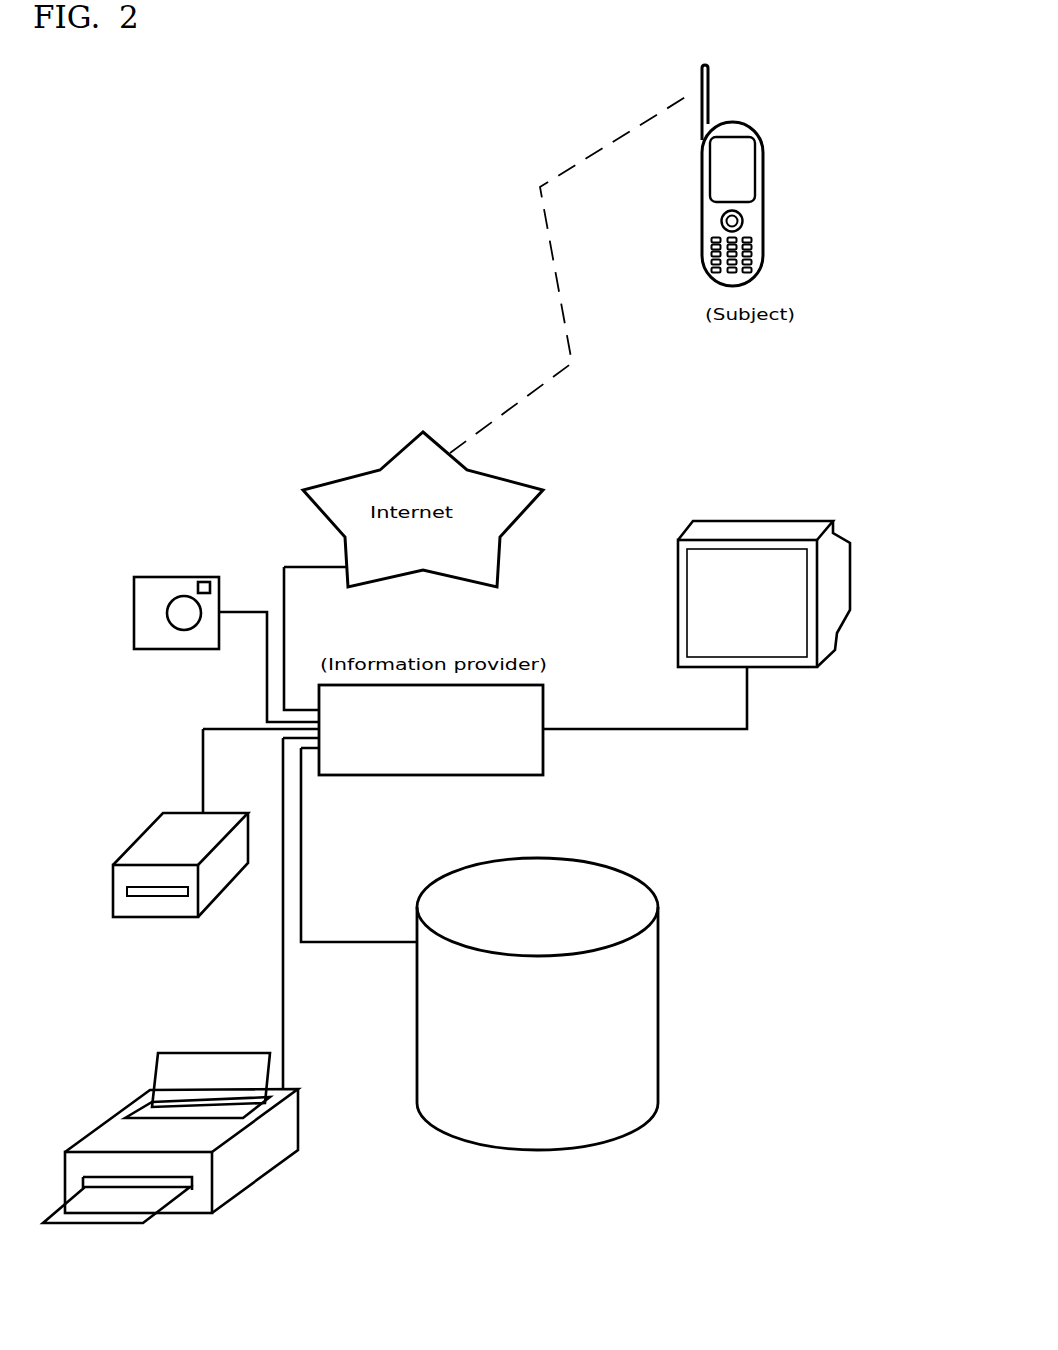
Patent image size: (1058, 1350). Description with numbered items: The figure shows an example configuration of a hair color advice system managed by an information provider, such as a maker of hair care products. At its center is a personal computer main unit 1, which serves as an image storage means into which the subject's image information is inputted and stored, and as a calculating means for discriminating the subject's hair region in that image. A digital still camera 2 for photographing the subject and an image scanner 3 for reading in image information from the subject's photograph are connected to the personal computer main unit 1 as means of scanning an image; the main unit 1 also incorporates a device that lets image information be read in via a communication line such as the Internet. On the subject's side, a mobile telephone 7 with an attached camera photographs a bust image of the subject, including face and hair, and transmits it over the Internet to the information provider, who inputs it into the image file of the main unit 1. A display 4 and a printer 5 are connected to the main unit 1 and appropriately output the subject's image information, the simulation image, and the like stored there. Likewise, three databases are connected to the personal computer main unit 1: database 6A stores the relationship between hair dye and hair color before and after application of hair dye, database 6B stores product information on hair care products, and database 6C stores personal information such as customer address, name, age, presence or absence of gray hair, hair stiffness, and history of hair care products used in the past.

The personal computer main unit 1 is at (431, 730).
The digital still camera 2 is at (167, 642).
The image scanner 3 is at (176, 881).
The display 4 is at (764, 594).
The printer 5 is at (170, 1157).
The database 6A is at (537, 1004).
The database 6B is at (537, 1004).
The database 6C is at (537, 1004).
The mobile telephone 7 is at (806, 175).